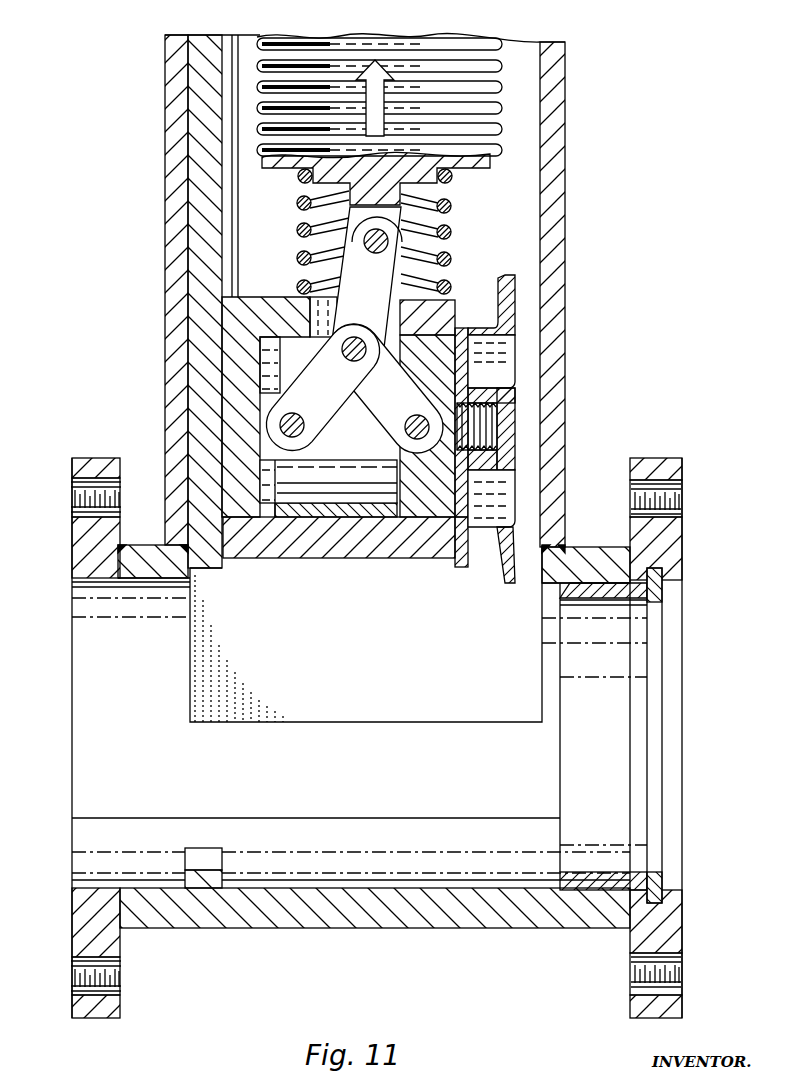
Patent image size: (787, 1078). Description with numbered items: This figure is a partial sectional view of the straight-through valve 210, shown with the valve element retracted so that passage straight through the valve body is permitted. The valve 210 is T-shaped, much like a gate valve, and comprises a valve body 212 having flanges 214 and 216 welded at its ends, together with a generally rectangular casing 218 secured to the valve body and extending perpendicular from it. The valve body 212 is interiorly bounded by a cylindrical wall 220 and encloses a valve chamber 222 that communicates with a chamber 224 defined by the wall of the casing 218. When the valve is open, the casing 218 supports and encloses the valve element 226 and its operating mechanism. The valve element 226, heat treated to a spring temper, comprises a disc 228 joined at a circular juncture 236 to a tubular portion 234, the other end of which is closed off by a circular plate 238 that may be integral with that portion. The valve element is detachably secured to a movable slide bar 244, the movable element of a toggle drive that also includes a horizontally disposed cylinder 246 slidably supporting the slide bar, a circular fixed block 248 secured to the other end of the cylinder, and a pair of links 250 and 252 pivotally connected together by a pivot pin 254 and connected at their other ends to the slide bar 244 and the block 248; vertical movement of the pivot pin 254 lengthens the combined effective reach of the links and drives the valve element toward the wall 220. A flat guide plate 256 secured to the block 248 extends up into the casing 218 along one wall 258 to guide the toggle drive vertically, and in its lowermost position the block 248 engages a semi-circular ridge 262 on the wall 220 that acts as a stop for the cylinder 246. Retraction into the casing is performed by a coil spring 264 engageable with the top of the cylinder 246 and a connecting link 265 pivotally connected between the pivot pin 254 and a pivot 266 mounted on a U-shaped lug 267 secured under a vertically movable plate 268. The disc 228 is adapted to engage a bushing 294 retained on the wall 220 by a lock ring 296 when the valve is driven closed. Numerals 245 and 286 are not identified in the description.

The valve 210 is at (358, 950).
The valve body 212 is at (359, 751).
The flange 214 is at (74, 912).
The flange 216 is at (683, 925).
The casing 218 is at (565, 108).
The cylindrical wall 220 is at (315, 893).
The valve chamber 222 is at (398, 872).
The chamber 224 is at (553, 255).
The valve element 226 is at (495, 574).
The disc 228 is at (515, 300).
The tubular portion 234 is at (483, 338).
The circular juncture 236 is at (483, 342).
The circular plate 238 is at (470, 491).
The slide bar 244 is at (410, 504).
The carrier plate corner 245 is at (466, 541).
The cylinder 246 is at (311, 541).
The fixed block 248 is at (213, 358).
The link 250 is at (401, 406).
The link 252 is at (326, 406).
The pivot pin 254 is at (355, 368).
The guide plate 256 is at (233, 48).
The wall 258 is at (176, 126).
The semi-circular ridge 262 is at (194, 882).
The coil spring 264 is at (297, 230).
The connecting link 265 is at (363, 283).
The pivot 266 is at (403, 230).
The U-shaped lug 267 is at (455, 181).
The vertically movable plate 268 is at (298, 172).
The bellows 286 is at (500, 42).
The bushing 294 is at (596, 882).
The lock ring 296 is at (666, 886).